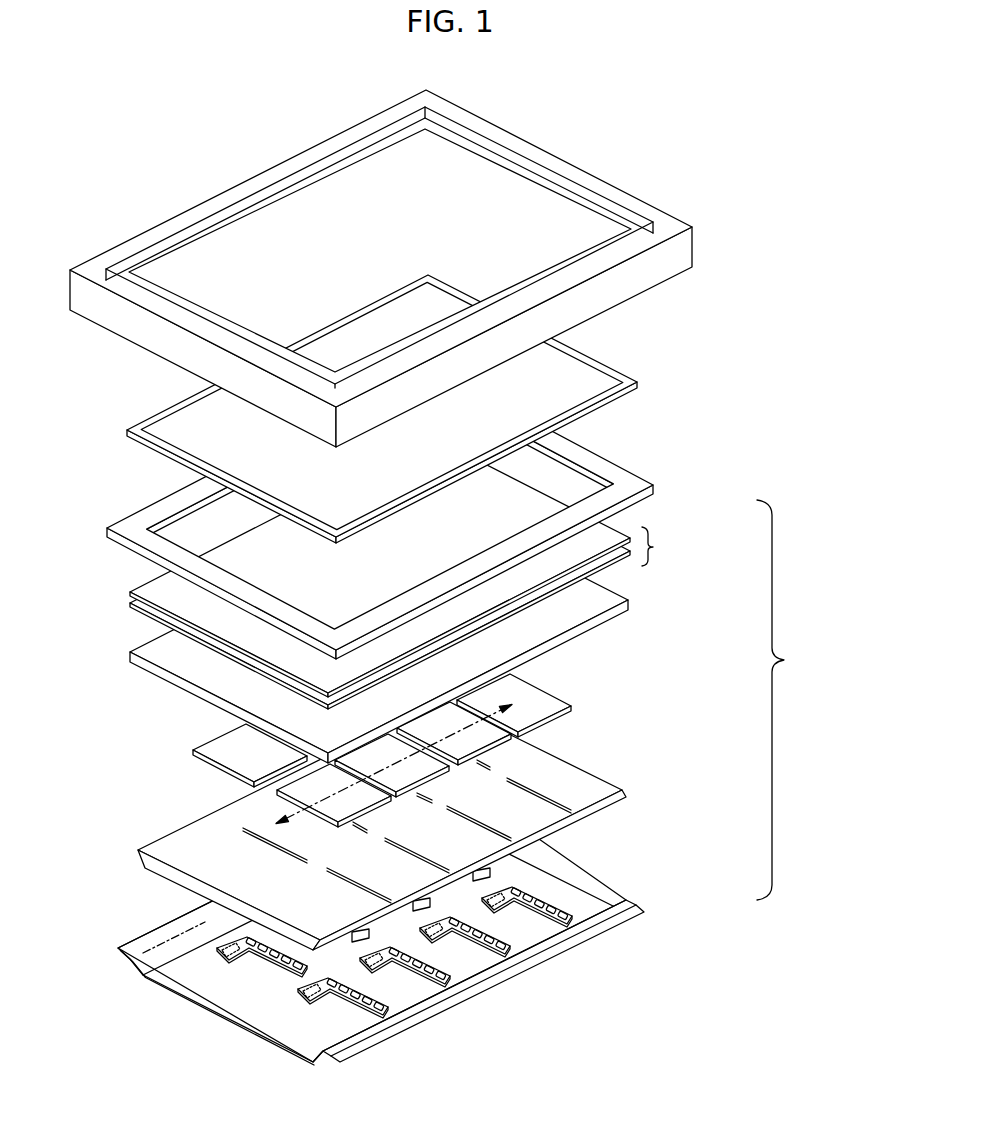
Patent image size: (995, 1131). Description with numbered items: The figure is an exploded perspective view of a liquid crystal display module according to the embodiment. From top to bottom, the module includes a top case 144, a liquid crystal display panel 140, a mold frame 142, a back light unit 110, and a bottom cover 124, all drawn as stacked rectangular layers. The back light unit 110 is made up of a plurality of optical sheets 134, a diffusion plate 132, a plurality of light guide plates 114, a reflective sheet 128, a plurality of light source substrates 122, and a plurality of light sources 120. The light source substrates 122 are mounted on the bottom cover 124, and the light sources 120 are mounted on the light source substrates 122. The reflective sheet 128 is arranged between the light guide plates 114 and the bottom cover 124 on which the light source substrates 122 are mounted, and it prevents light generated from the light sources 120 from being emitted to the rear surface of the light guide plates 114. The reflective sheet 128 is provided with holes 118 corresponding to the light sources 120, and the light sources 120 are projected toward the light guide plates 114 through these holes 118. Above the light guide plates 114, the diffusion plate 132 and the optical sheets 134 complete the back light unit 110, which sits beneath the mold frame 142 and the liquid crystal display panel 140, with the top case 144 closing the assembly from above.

The back light unit 110 is at (473, 714).
The light guide plates 114 is at (535, 696).
The holes 118 is at (526, 783).
The light sources 120 is at (523, 887).
The light source substrates 122 is at (553, 902).
The bottom cover 124 is at (635, 903).
The reflective sheet 128 is at (563, 790).
The diffusion plate 132 is at (583, 595).
The optical sheets 134 is at (653, 547).
The liquid crystal display panel 140 is at (630, 385).
The mold frame 142 is at (630, 477).
The top case 144 is at (672, 257).